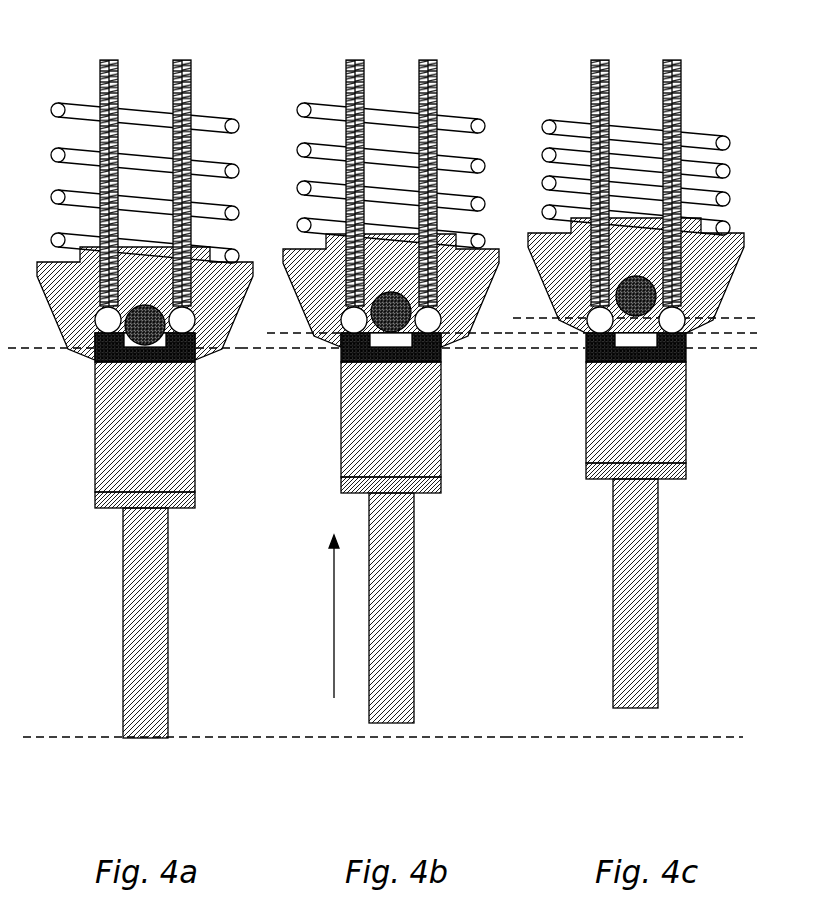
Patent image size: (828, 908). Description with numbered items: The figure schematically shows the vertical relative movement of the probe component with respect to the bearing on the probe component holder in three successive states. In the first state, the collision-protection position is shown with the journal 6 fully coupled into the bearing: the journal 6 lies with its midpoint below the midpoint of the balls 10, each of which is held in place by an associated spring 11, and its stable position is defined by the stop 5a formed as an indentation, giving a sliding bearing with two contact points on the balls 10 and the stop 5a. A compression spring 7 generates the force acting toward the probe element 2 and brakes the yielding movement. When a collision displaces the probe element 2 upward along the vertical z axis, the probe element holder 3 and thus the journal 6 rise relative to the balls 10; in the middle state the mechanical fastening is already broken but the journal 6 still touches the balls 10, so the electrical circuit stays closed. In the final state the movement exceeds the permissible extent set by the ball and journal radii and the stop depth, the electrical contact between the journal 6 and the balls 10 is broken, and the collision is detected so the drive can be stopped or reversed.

In FIG. 4A, the probe element 2 is at (155, 673).
In FIG. 4B, the probe element 2 is at (392, 672).
In FIG. 4C, the probe element 2 is at (635, 673).
In FIG. 4A, the probe element holder 3 is at (180, 435).
In FIG. 4B, the probe element holder 3 is at (430, 427).
In FIG. 4C, the probe element holder 3 is at (674, 420).
In FIG. 4A, the stop 5a is at (123, 360).
In FIG. 4B, the stop 5a is at (353, 360).
In FIG. 4C, the stop 5a is at (597, 358).
In FIG. 4A, the journal 6 is at (178, 368).
In FIG. 4B, the journal 6 is at (430, 372).
In FIG. 4C, the journal 6 is at (675, 372).
In FIG. 4A, the compression spring 7 is at (198, 122).
In FIG. 4B, the compression spring 7 is at (447, 122).
In FIG. 4C, the compression spring 7 is at (692, 138).
In FIG. 4A, the balls 10 is at (182, 320).
In FIG. 4B, the balls 10 is at (428, 320).
In FIG. 4C, the balls 10 is at (672, 320).
In FIG. 4A, the spring 11 is at (180, 63).
In FIG. 4B, the spring 11 is at (428, 63).
In FIG. 4C, the spring 11 is at (663, 63).